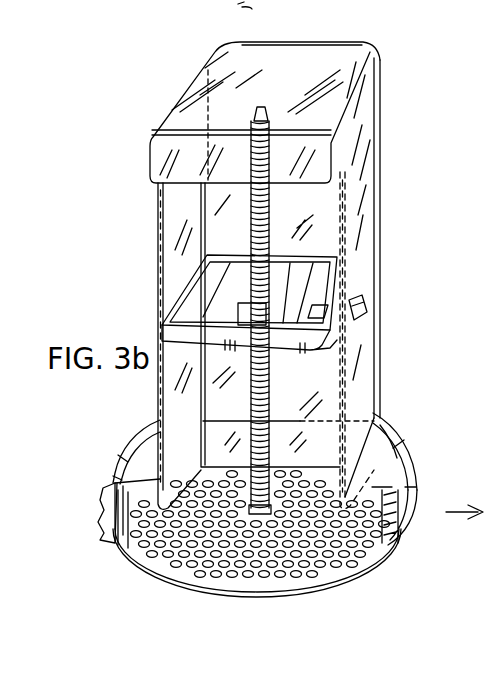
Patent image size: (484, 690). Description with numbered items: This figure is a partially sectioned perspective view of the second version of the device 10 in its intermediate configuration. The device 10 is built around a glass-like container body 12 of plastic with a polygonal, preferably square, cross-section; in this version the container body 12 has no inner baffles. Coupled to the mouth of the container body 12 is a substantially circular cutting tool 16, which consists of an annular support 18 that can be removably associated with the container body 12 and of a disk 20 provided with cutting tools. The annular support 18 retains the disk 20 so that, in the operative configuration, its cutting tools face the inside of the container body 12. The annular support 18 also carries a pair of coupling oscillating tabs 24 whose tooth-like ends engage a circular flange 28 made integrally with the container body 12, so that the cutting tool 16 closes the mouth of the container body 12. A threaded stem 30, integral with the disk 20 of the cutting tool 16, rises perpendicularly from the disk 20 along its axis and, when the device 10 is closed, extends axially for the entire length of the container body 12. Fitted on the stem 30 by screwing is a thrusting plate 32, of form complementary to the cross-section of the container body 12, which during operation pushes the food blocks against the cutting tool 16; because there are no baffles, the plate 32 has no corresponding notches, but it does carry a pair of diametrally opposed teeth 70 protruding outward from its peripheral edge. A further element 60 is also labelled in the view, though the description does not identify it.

The device 10 is at (157, 99).
The glass-like container body 12 is at (352, 60).
The cutting tool 16 is at (137, 578).
The annular support 18 is at (142, 436).
The disk 20 is at (303, 572).
The coupling oscillating tabs 24 is at (120, 468).
The circular flange 28 is at (385, 435).
The threaded stem 30 is at (272, 208).
The thrusting plate 32 is at (330, 356).
The upper element 60 is at (224, 3).
The teeth 70 is at (367, 314).